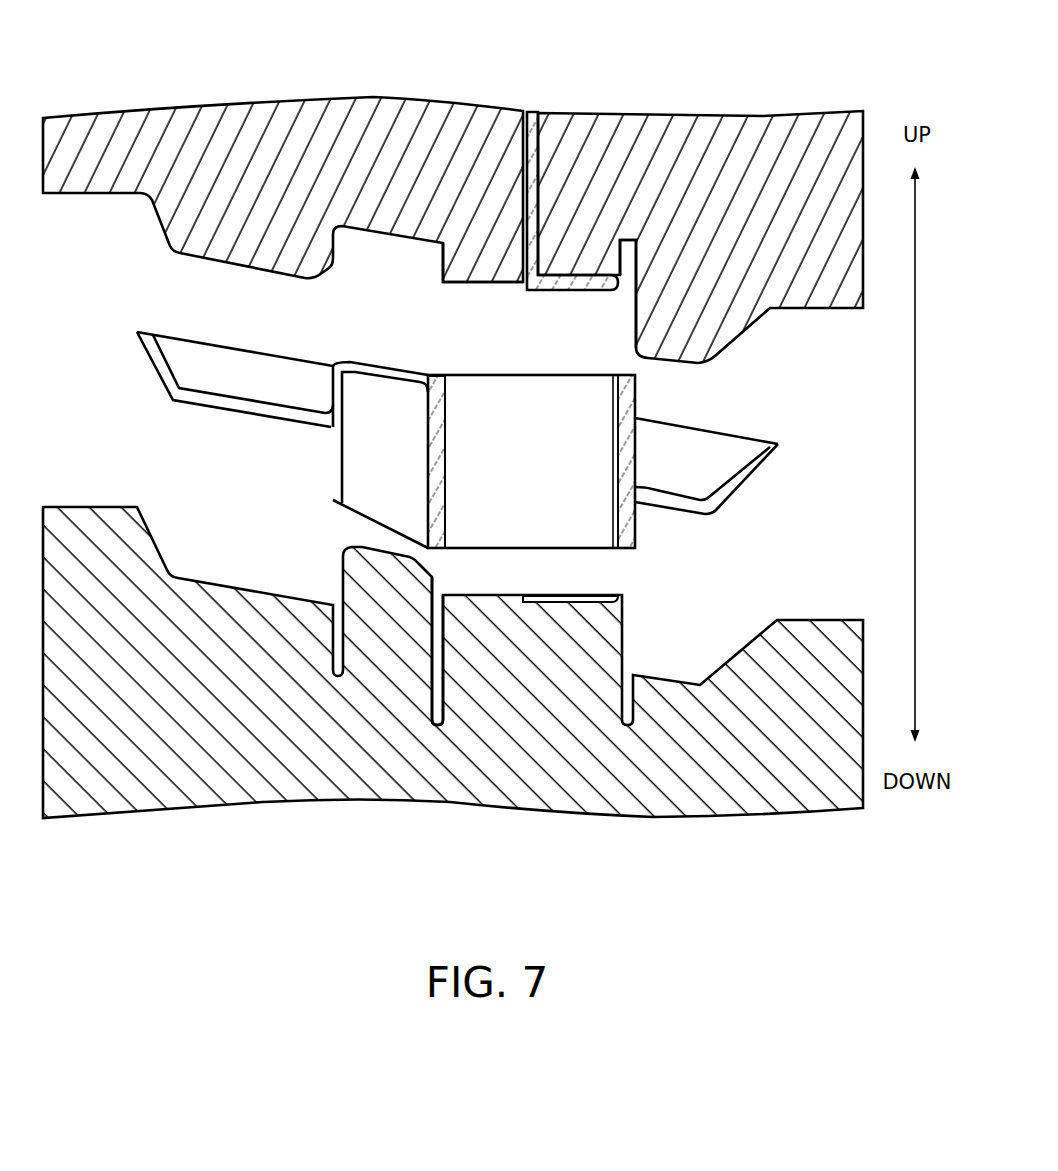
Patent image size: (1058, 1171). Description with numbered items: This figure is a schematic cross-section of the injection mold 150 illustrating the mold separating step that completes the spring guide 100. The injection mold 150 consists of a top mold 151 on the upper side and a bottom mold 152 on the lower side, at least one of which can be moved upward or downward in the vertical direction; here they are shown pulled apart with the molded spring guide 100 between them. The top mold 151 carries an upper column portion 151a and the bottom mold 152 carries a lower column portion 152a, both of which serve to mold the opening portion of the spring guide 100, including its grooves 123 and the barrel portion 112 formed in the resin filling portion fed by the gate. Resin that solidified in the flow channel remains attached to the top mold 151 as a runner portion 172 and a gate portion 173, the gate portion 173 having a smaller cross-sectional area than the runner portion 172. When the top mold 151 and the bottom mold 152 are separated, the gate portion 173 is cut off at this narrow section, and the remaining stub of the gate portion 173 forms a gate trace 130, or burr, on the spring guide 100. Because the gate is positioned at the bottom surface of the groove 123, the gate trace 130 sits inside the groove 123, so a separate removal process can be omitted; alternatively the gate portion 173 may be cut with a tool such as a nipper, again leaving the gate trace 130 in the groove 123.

The spring guide 100 is at (436, 401).
The barrel portion 112 is at (633, 375).
The groove 123 is at (620, 440).
The gate trace (burr) 130 is at (617, 415).
The injection mold 150 is at (453, 184).
The top mold 151 is at (225, 127).
The upper column portion 151a is at (440, 262).
The bottom mold 152 is at (453, 690).
The lower column portion 152a is at (440, 657).
The runner portion 172 is at (547, 293).
The gate portion 173 is at (618, 297).